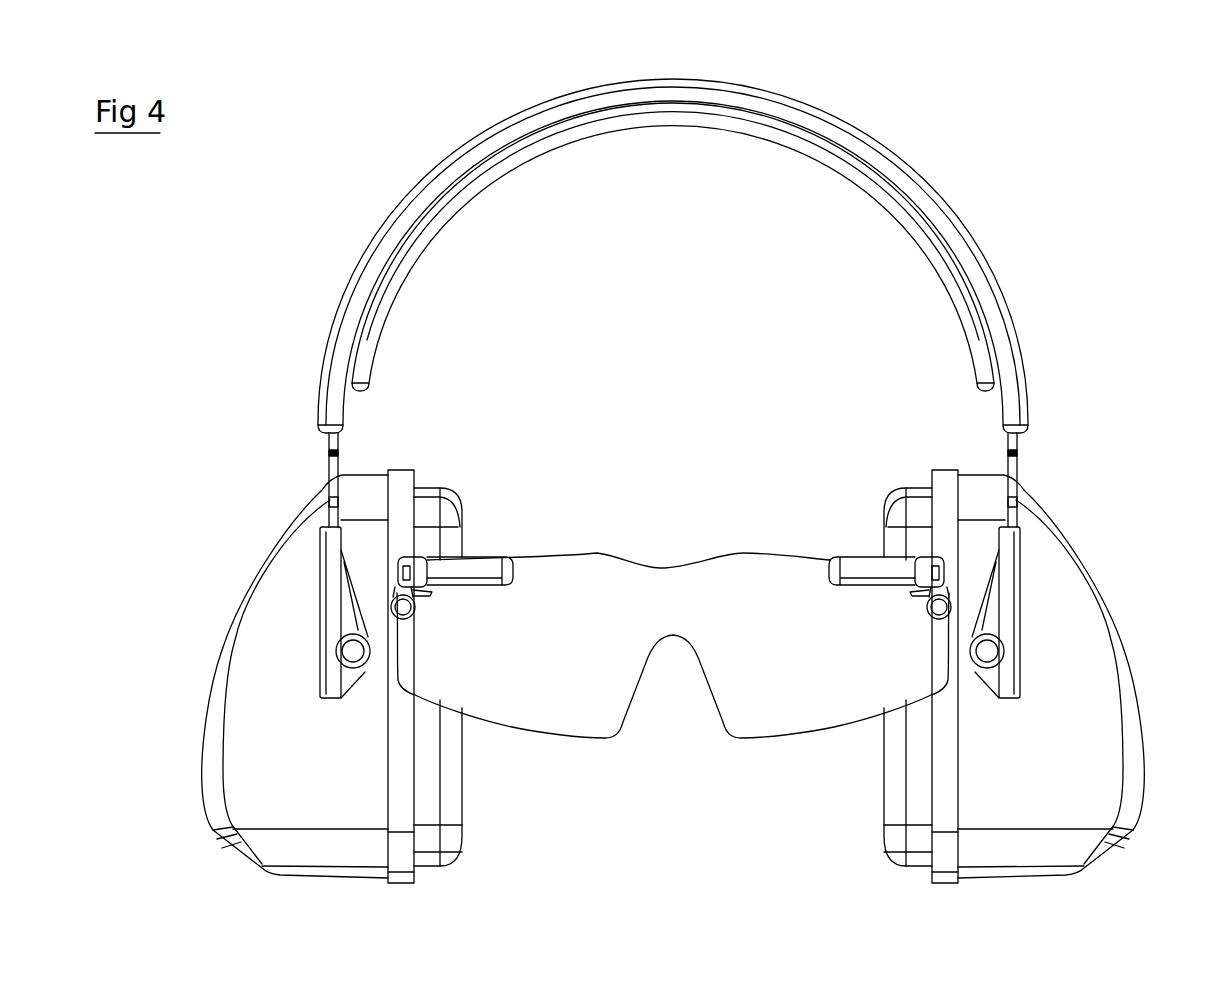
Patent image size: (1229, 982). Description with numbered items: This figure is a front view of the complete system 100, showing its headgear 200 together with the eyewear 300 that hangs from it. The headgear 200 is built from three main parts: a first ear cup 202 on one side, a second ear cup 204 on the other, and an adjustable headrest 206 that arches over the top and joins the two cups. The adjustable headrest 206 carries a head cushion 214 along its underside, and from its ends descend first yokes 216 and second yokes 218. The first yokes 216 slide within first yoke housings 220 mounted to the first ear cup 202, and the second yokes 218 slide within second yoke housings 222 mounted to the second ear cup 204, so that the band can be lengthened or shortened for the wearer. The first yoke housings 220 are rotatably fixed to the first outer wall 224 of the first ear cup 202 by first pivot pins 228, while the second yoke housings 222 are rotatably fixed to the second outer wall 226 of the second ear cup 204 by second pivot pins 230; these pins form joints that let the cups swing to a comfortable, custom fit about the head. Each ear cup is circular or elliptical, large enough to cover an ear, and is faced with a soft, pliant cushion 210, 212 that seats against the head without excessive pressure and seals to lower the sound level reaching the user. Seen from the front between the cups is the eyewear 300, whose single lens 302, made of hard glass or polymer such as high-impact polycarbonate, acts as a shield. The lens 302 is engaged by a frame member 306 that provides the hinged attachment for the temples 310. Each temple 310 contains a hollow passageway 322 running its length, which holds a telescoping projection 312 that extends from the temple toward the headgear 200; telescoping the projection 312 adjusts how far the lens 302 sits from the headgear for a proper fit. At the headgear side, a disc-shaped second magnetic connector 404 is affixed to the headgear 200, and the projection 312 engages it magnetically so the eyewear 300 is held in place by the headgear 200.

The system 100 is at (1068, 83).
The headgear 200 is at (1073, 428).
The first ear cup 202 is at (1134, 720).
The second ear cup 204 is at (205, 745).
The adjustable headrest 206 is at (930, 207).
The cushion 210 is at (895, 493).
The cushion 212 is at (460, 508).
The head cushion 214 is at (370, 327).
The first yokes 216 is at (1018, 467).
The second yokes 218 is at (328, 456).
The first yoke housings 220 is at (1010, 560).
The second yoke housings 222 is at (333, 553).
The first outer wall 224 is at (1075, 618).
The second outer wall 226 is at (266, 640).
The first pivot pins 228 is at (987, 651).
The second pivot pins 230 is at (353, 651).
The eyewear 300 is at (690, 538).
The lens 302 is at (787, 712).
The frame member 306 is at (487, 567).
The temples 310 is at (418, 555).
The projection 312 is at (408, 560).
The hollow passageway 322 is at (463, 557).
The second magnetic connector 404 is at (389, 592).